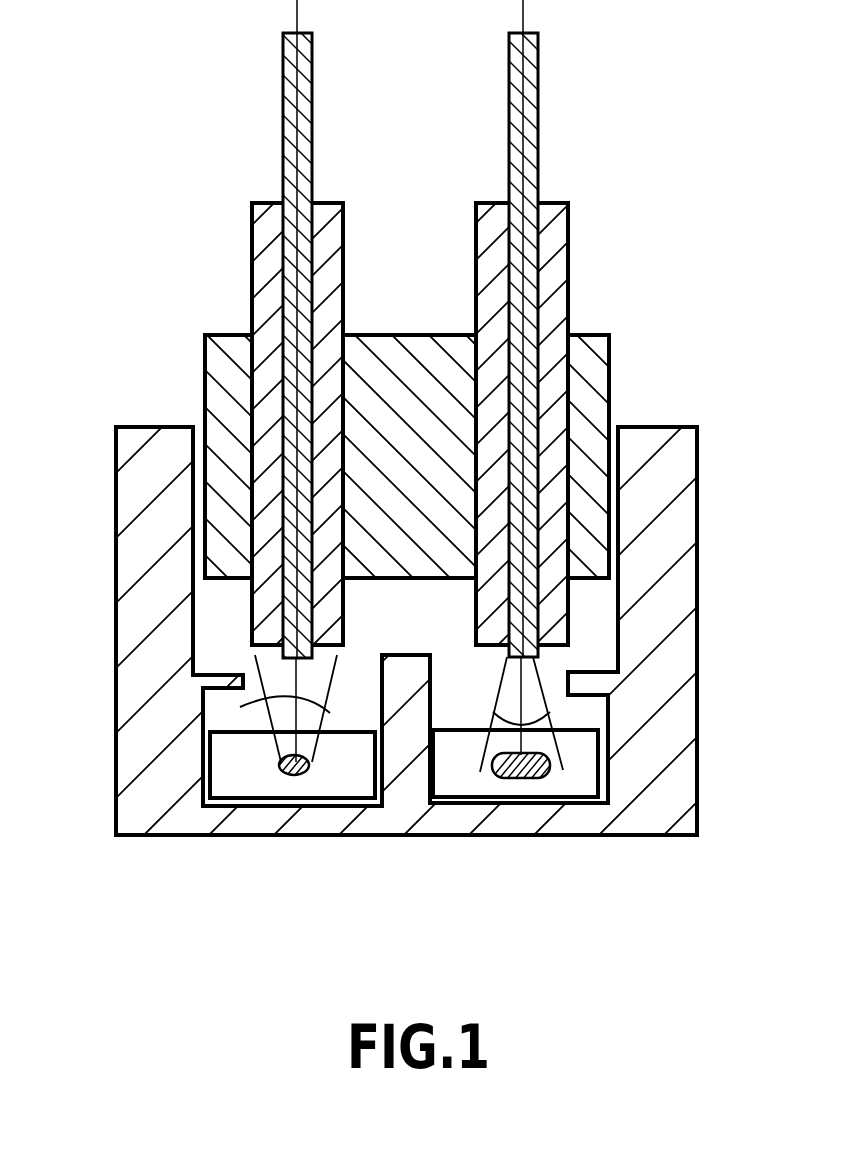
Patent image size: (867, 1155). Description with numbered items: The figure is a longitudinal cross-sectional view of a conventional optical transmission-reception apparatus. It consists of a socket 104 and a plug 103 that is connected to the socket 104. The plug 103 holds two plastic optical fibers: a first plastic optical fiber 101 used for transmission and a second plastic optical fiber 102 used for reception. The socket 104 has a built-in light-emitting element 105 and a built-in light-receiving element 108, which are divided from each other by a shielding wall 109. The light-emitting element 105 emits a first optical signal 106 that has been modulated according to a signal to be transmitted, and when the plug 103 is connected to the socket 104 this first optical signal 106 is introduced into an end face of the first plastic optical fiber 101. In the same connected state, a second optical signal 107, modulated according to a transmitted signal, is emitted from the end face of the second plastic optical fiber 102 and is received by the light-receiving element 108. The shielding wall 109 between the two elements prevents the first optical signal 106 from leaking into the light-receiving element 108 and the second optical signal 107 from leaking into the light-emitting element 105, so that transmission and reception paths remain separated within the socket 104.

The first plastic optical fiber 101 is at (283, 120).
The second plastic optical fiber 102 is at (538, 67).
The plug 103 is at (227, 408).
The socket 104 is at (655, 438).
The light-emitting element 105 is at (293, 775).
The first optical signal 106 is at (245, 708).
The second optical signal 107 is at (497, 680).
The light-receiving element 108 is at (585, 757).
The shielding wall 109 is at (405, 677).